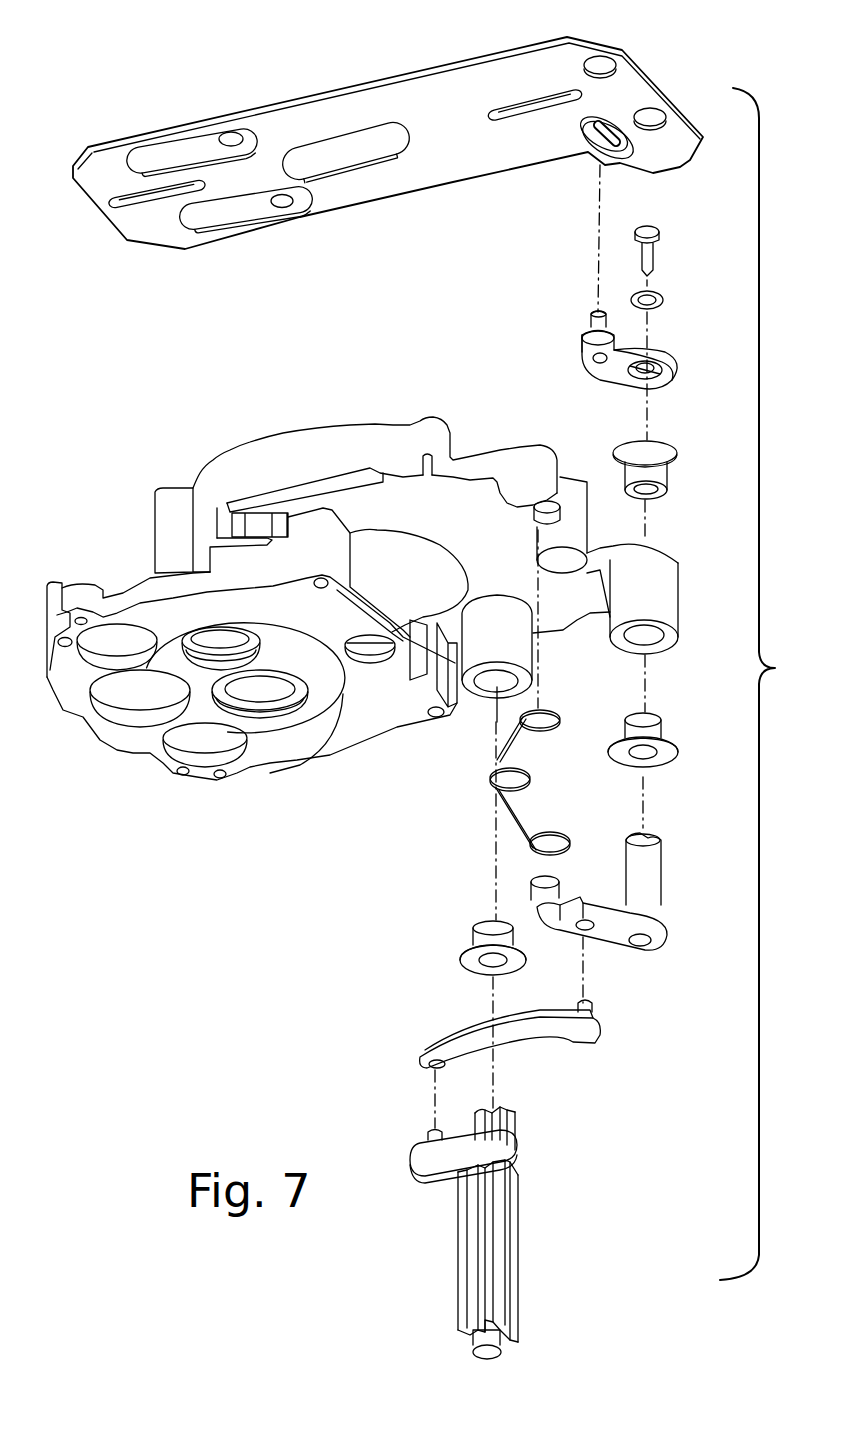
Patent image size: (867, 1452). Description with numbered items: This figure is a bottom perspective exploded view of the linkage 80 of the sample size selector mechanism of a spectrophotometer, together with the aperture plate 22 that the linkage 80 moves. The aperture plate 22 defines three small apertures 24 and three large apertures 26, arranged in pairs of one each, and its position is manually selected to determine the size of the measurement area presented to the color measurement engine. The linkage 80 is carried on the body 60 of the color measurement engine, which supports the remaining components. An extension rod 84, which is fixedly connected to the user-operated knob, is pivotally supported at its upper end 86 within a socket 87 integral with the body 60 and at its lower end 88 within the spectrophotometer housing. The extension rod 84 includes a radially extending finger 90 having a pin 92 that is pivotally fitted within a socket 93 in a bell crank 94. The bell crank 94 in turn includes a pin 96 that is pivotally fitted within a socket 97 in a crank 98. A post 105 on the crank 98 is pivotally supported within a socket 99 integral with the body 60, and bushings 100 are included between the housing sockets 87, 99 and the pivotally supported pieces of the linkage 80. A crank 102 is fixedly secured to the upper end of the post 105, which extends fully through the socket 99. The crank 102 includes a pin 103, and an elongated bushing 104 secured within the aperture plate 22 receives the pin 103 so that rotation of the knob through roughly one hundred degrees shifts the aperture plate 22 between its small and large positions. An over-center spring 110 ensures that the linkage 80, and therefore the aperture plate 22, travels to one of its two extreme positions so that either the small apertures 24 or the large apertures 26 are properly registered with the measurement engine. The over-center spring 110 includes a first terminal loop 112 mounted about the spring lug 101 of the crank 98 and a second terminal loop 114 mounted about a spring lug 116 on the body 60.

The aperture plate 22 is at (388, 76).
The small apertures 24 is at (148, 158).
The large apertures 26 is at (231, 139).
The elongated bushing 104 is at (618, 120).
The pin 103 is at (590, 316).
The crank 102 is at (596, 373).
The body 60 is at (263, 443).
The spring lug 116 is at (550, 493).
The socket 87 is at (527, 655).
The socket 99 is at (670, 567).
The bushings 100 is at (668, 485).
The second terminal loop 114 is at (555, 728).
The over-center spring 110 is at (492, 787).
The first terminal loop 112 is at (560, 833).
The post 105 is at (650, 863).
The crank 98 is at (622, 950).
The spring lug 101 is at (530, 905).
The socket 97 is at (580, 930).
The pin 96 is at (592, 1006).
The bell crank 94 is at (533, 1050).
The socket 93 is at (427, 1070).
The pin 92 is at (428, 1135).
The radially extending finger 90 is at (432, 1167).
The upper end 86 is at (503, 1117).
The extension rod 84 is at (457, 1252).
The lower end 88 is at (473, 1345).
The linkage 80 is at (775, 684).